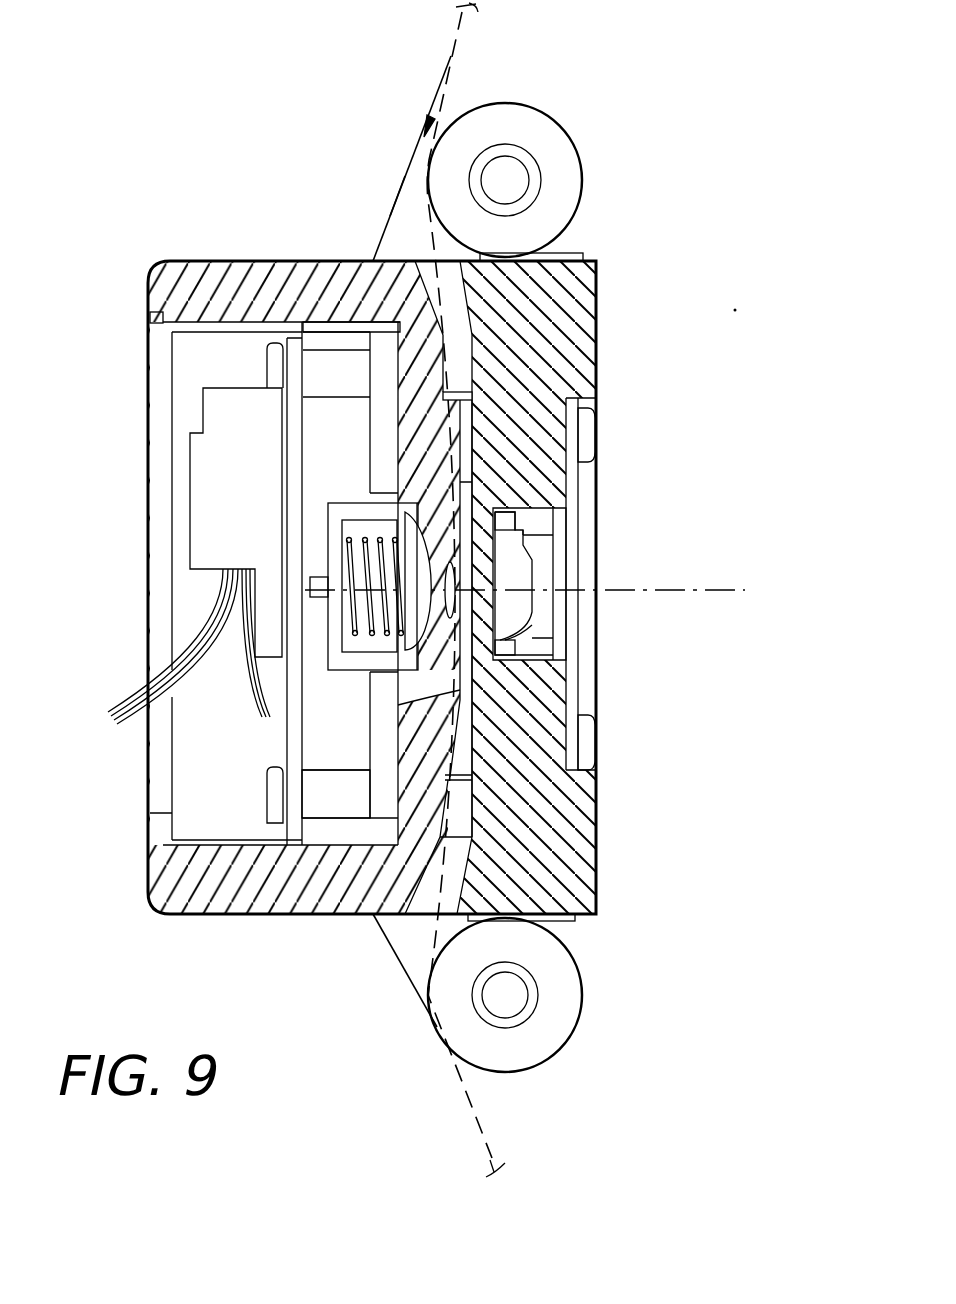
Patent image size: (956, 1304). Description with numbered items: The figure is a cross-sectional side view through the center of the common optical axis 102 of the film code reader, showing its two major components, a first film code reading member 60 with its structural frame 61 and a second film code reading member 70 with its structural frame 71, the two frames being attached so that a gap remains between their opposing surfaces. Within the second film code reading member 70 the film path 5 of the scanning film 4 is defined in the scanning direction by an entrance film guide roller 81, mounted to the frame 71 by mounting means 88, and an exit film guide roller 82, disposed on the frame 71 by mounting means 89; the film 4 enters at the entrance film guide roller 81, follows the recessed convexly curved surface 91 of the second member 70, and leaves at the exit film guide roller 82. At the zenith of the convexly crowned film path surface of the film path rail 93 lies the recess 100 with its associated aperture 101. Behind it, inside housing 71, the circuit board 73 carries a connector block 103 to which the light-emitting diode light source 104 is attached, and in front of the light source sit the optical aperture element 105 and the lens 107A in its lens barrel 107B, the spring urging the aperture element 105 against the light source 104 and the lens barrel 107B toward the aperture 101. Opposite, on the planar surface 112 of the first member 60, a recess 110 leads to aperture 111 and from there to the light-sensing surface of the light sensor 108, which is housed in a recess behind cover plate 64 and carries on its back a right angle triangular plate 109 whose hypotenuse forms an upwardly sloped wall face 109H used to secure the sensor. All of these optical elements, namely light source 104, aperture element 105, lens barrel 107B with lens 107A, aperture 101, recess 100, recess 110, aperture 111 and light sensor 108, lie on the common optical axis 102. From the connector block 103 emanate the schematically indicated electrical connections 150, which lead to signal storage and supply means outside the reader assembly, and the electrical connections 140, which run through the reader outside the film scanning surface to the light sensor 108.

The scanning film 4 is at (453, 75).
The film path 5 is at (437, 97).
The first film code reading member 60 is at (592, 925).
The structural frame 61 is at (597, 300).
The cover plate 64 is at (557, 505).
The second film code reading member 70 is at (156, 928).
The structural frame 71 is at (176, 260).
The circuit board 73 is at (283, 766).
The entrance film guide roller 81 is at (577, 150).
The exit film guide roller 82 is at (583, 1007).
The mounting means 88 is at (392, 210).
The mounting means 89 is at (400, 962).
The recessed convexly curved surface 91 is at (377, 712).
The convexly curved film path rail 93 is at (397, 422).
The recess 100 is at (456, 662).
The aperture 101 is at (440, 493).
The common optical axis 102 is at (728, 576).
The connector block 103 is at (190, 555).
The light-emitting diode light source 104 is at (330, 556).
The optical aperture element 105 is at (333, 530).
The lens 107A is at (398, 503).
The lens barrel 107B is at (327, 503).
The light sensor 108 is at (553, 638).
The right angle triangular plate 109 is at (532, 618).
The upwardly sloped wall face 109H is at (532, 553).
The recess 110 is at (478, 672).
The aperture 111 is at (480, 498).
The planar surface 112 is at (478, 700).
The electrical connections 140 is at (244, 680).
The electrical connections 150 is at (146, 694).